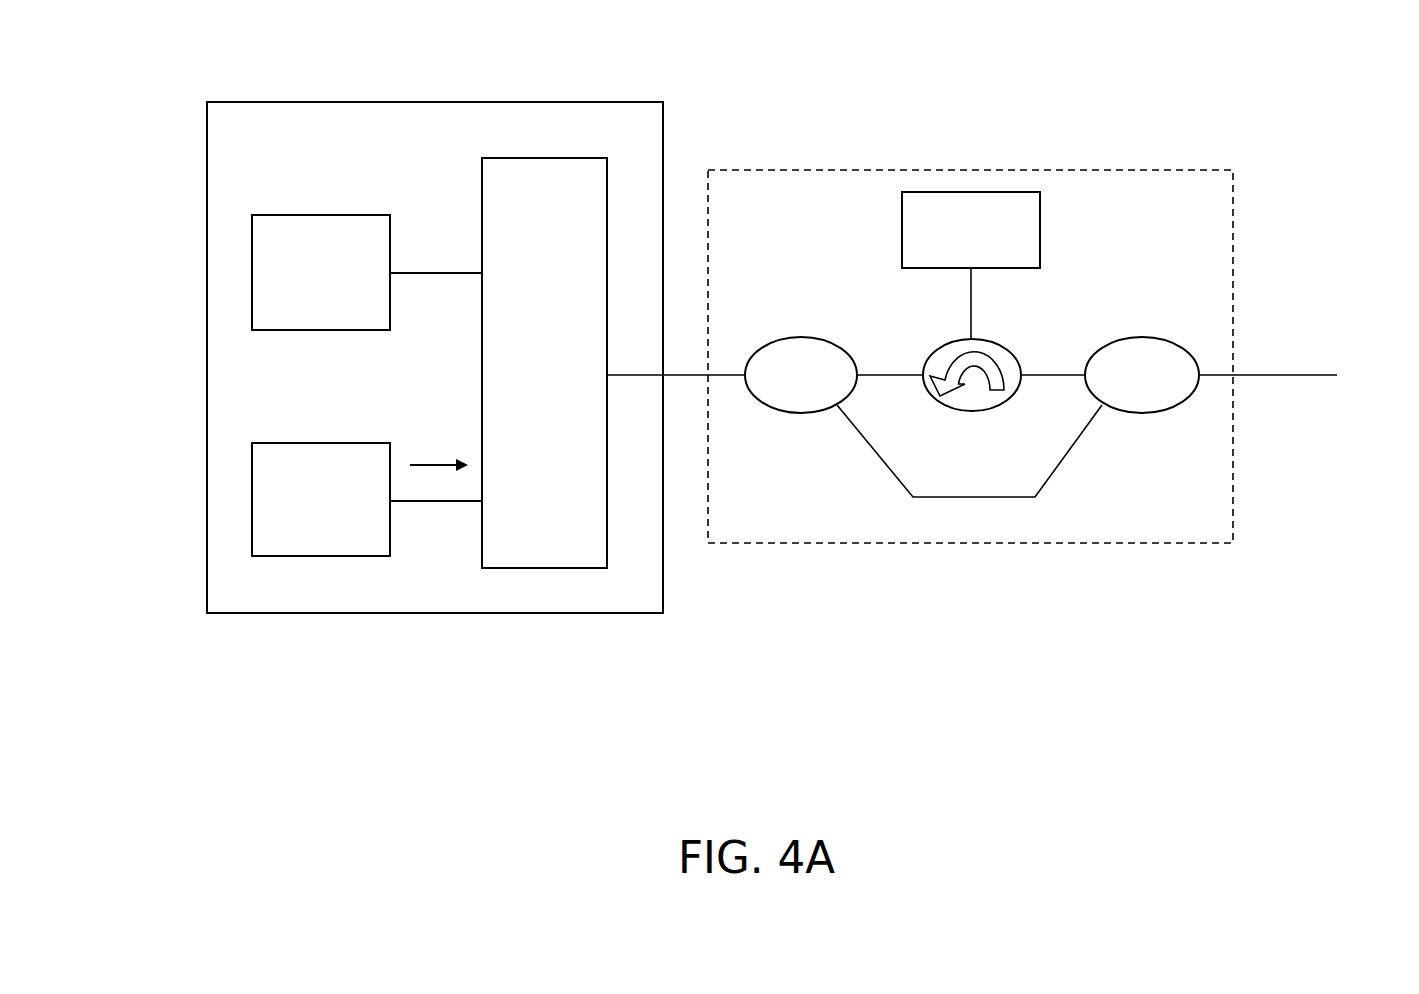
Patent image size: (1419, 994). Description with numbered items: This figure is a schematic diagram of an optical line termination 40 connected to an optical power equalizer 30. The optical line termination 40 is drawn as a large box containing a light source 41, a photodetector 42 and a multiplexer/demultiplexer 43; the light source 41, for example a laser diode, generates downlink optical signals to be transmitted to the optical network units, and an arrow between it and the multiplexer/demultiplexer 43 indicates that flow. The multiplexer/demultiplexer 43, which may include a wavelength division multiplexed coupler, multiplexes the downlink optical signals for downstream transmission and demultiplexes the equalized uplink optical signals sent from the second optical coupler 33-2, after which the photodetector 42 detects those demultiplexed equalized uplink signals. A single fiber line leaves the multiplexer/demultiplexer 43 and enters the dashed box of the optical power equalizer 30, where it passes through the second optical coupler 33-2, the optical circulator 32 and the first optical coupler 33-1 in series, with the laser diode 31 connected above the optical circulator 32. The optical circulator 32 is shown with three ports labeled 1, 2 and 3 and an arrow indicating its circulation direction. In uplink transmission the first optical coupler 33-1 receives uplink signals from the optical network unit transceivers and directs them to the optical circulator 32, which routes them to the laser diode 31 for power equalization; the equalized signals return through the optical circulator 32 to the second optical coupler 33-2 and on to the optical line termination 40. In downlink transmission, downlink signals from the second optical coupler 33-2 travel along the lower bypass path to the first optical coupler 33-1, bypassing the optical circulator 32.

The optical line termination 40 is at (402, 100).
The light source 41 is at (298, 442).
The photodetector 42 is at (298, 213).
The multiplexer/demultiplexer 43 is at (482, 205).
The optical power equalizer 30 is at (1233, 225).
The laser diode 31 is at (1042, 237).
The optical circulator 32 is at (992, 340).
The first optical coupler 33-1 is at (1122, 337).
The second optical coupler 33-2 is at (800, 317).
The circulator port 1 is at (1048, 356).
The circulator port 2 is at (953, 321).
The circulator port 3 is at (908, 356).